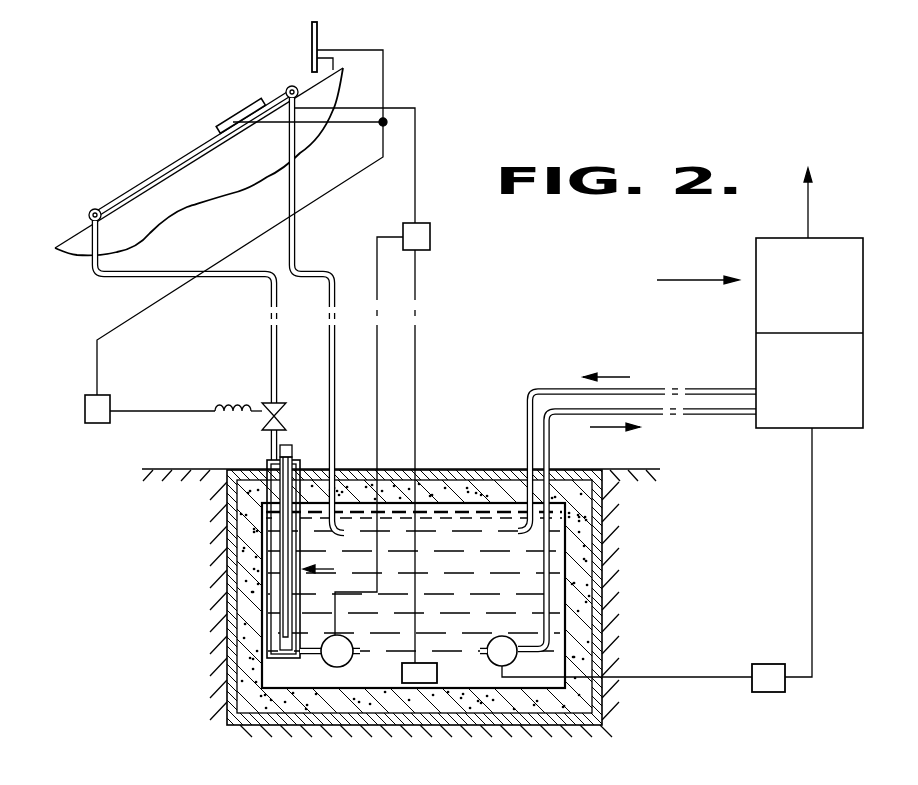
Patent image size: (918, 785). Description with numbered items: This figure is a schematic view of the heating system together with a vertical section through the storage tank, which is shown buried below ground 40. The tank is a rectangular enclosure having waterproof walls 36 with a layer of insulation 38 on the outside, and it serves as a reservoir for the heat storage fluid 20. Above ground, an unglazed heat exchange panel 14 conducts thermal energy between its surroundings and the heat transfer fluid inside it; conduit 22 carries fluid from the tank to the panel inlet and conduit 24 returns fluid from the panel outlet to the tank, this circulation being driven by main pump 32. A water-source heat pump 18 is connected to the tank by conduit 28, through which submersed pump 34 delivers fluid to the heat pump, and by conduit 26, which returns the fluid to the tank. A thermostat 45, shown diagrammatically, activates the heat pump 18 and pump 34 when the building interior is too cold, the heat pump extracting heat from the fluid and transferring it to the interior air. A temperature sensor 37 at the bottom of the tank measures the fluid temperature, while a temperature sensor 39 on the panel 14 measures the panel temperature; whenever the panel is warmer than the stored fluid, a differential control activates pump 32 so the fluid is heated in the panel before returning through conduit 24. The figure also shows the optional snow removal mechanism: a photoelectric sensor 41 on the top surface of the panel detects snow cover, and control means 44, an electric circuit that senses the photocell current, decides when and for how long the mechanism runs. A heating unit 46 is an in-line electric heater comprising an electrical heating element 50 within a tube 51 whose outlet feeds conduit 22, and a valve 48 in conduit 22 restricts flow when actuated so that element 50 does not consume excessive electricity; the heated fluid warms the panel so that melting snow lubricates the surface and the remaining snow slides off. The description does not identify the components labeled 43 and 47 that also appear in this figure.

The unglazed heat exchange panel 14 is at (168, 165).
The water-source heat pump 18 is at (822, 305).
The heat transfer fluid 20 is at (478, 610).
The conduit 22 is at (271, 342).
The conduit 24 is at (337, 413).
The conduit 26 is at (527, 437).
The conduit 28 is at (548, 450).
The main pump 32 is at (326, 666).
The submersed pump 34 is at (490, 637).
The waterproof walls 36 is at (586, 581).
The temperature sensor 37 is at (412, 684).
The layer of insulation 38 is at (598, 617).
The temperature sensor 39 is at (256, 108).
The ground 40 is at (634, 481).
The sensor 41 is at (234, 118).
The controller 43 is at (430, 232).
The control means 44 is at (85, 406).
The thermostat 45 is at (762, 665).
The heating unit 46 is at (337, 569).
The sensor 47 is at (318, 30).
The valve 48 is at (262, 428).
The electrical heating element 50 is at (285, 595).
The tube 51 is at (268, 553).